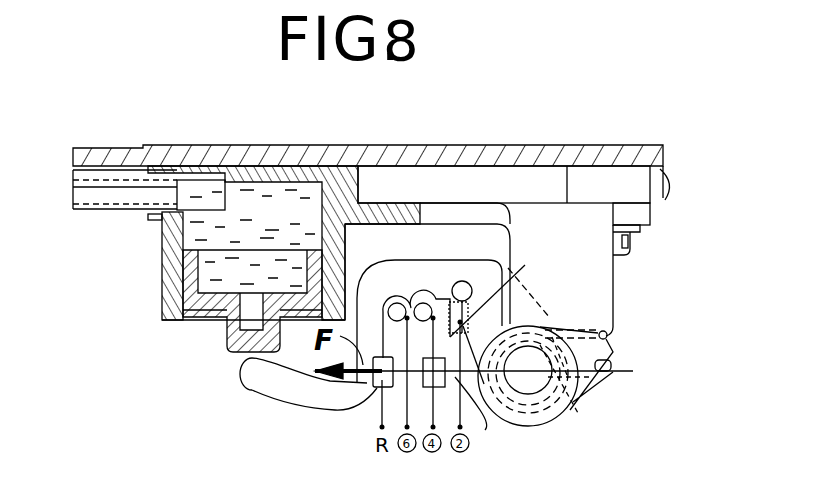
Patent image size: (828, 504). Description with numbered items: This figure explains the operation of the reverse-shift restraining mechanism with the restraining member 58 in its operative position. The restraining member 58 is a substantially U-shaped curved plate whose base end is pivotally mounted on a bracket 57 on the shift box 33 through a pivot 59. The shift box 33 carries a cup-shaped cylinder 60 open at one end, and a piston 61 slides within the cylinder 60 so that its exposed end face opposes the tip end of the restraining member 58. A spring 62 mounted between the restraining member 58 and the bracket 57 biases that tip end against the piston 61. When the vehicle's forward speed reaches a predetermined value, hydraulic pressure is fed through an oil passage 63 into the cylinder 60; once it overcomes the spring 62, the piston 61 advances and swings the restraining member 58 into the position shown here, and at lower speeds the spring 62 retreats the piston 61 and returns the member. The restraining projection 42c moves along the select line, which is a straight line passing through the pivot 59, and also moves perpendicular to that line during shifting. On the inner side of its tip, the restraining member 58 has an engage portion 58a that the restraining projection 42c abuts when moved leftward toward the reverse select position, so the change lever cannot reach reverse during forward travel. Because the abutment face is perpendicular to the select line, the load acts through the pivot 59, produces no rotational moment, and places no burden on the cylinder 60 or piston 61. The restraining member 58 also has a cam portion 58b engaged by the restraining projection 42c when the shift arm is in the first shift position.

The shift box 33 is at (452, 212).
The bracket 57 is at (593, 282).
The restraining member 58 is at (292, 402).
The engage portion 58a is at (383, 392).
The cam portion 58b is at (472, 303).
The pivot 59 is at (573, 407).
The cylinder 60 is at (165, 266).
The piston 61 is at (225, 330).
The spring 62 is at (607, 334).
The oil passage 63 is at (113, 200).
The restraining projection 42c is at (497, 393).